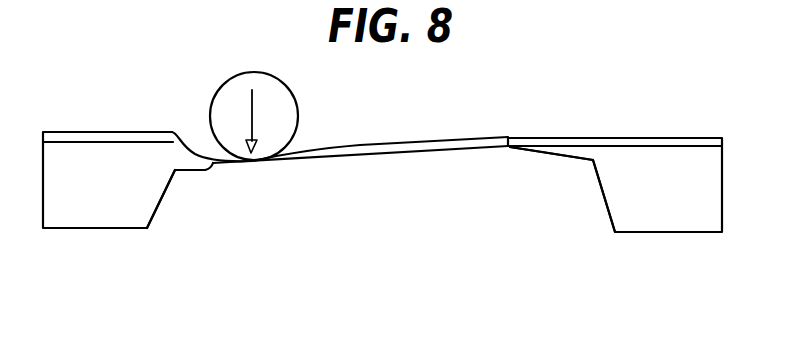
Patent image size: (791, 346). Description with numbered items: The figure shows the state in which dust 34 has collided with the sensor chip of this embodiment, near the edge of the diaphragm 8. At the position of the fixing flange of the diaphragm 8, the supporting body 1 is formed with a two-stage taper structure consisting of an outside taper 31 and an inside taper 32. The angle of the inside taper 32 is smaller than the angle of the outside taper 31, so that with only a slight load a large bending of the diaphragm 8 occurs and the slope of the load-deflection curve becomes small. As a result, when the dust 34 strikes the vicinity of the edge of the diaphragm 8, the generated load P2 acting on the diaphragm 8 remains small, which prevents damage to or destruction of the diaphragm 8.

The base / substrate 1 is at (648, 233).
The diaphragm 8 is at (427, 140).
The outside taper 31 is at (158, 208).
The inside taper 32 is at (212, 169).
The dust 34 is at (302, 118).
The generated load P2 is at (248, 118).